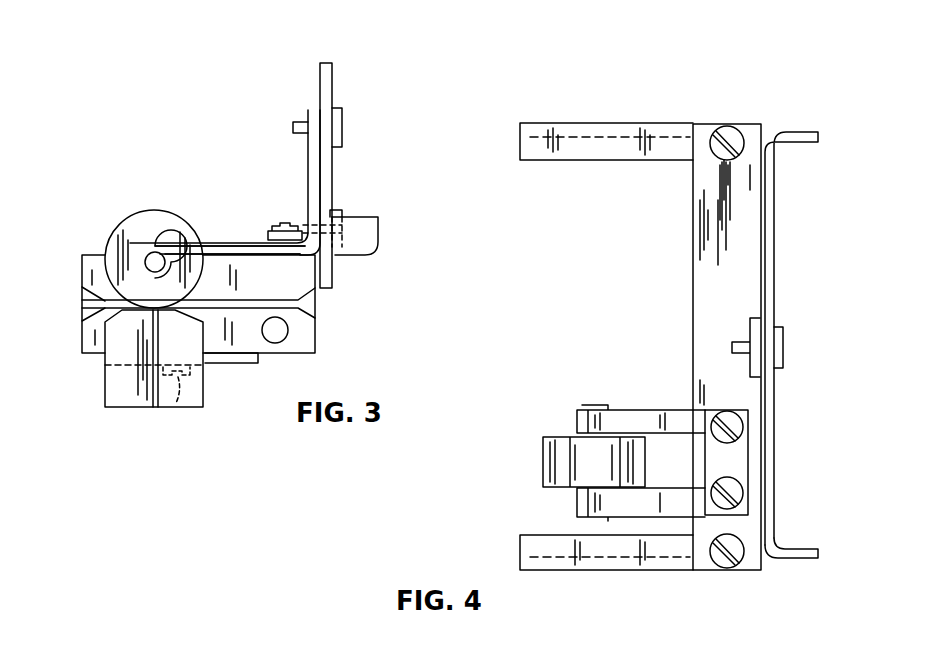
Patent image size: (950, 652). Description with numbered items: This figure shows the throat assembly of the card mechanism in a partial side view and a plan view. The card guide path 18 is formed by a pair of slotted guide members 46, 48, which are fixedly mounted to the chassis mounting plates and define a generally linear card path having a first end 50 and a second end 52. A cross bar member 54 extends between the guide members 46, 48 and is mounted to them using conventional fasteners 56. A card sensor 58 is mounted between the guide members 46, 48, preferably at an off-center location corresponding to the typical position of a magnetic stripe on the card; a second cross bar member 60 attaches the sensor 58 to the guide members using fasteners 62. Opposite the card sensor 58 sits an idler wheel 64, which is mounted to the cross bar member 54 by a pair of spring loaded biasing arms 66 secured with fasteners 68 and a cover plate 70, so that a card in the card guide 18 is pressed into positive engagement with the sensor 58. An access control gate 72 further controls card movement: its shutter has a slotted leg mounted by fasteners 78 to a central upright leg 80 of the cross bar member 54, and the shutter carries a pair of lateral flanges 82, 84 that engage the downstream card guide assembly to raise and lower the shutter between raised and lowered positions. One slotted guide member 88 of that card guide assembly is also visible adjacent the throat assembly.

In FIG. 3, the card guide path 18 is at (125, 312).
In FIG. 3, the slotted guide member 46 is at (313, 343).
In FIG. 4, the slotted guide member 46 is at (594, 132).
In FIG. 4, the slotted guide member 48 is at (555, 570).
In FIG. 3, the first end 50 is at (98, 308).
In FIG. 3, the second end 52 is at (315, 303).
In FIG. 3, the cross bar member 54 is at (252, 226).
In FIG. 4, the cross bar member 54 is at (693, 206).
In FIG. 4, the fasteners 56 is at (720, 130).
In FIG. 3, the card sensor 58 is at (124, 400).
In FIG. 3, the cross bar member 60 is at (242, 363).
In FIG. 3, the fasteners 62 is at (176, 403).
In FIG. 3, the idler wheel 64 is at (156, 210).
In FIG. 4, the idler wheel 64 is at (553, 437).
In FIG. 3, the spring loaded biasing arms 66 is at (214, 245).
In FIG. 4, the spring loaded biasing arms 66 is at (640, 413).
In FIG. 3, the fasteners 68 is at (278, 223).
In FIG. 4, the fasteners 68 is at (738, 420).
In FIG. 3, the cover plate 70 is at (286, 246).
In FIG. 4, the cover plate 70 is at (742, 460).
In FIG. 3, the access control gate 72 is at (345, 182).
In FIG. 4, the access control gate 72 is at (790, 254).
In FIG. 3, the fasteners 78 is at (342, 132).
In FIG. 4, the fasteners 78 is at (783, 347).
In FIG. 4, the central upright leg 80 is at (750, 332).
In FIG. 3, the lateral flange 82 is at (378, 250).
In FIG. 4, the lateral flange 82 is at (808, 132).
In FIG. 4, the lateral flange 84 is at (806, 560).
In FIG. 3, the slotted guide member 88 is at (312, 110).